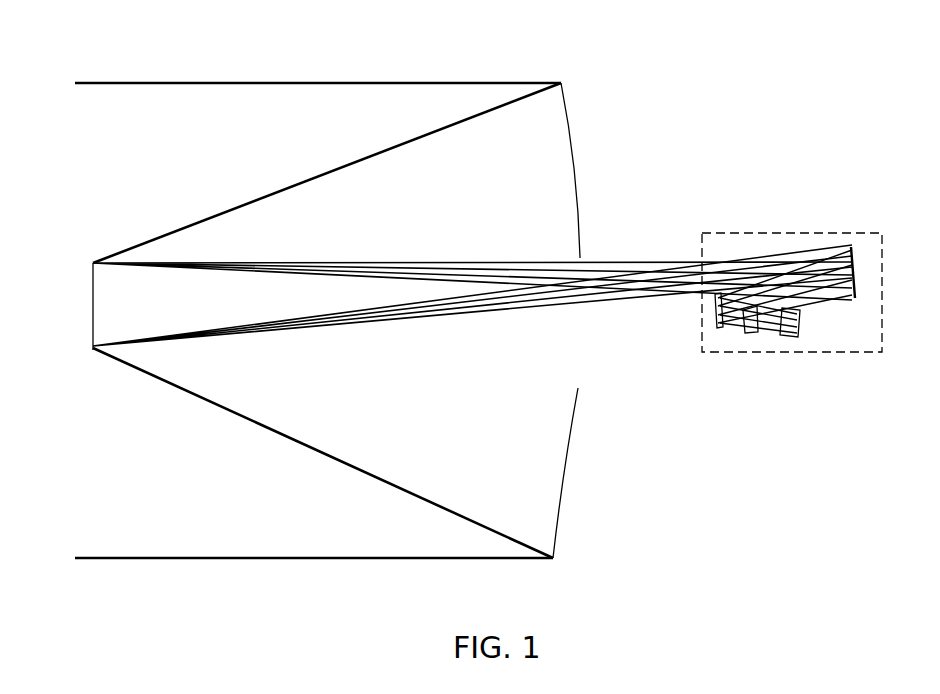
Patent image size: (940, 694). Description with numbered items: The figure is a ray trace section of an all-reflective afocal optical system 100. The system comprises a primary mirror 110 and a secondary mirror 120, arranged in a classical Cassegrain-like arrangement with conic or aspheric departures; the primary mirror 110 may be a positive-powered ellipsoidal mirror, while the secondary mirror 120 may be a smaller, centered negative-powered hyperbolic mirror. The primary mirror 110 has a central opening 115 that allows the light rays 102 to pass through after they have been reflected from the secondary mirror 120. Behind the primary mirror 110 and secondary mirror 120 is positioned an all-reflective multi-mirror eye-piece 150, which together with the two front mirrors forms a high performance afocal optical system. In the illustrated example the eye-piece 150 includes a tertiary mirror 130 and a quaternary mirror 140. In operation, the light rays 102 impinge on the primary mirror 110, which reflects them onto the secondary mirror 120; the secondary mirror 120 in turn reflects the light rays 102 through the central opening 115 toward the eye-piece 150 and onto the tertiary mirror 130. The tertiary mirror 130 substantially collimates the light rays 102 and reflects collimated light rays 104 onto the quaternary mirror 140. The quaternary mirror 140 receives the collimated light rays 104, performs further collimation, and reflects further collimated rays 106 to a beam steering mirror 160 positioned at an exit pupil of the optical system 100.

The all-reflective afocal optical system 100 is at (763, 89).
The light rays 102 is at (463, 262).
The collimated light rays 104 is at (832, 303).
The further collimated rays 106 is at (733, 331).
The primary mirror 110 is at (573, 160).
The central opening 115 is at (591, 362).
The secondary mirror 120 is at (97, 306).
The tertiary mirror 130 is at (851, 256).
The quaternary mirror 140 is at (713, 313).
The all-reflective multi-mirror eye-piece 150 is at (751, 233).
The beam steering mirror 160 is at (792, 339).